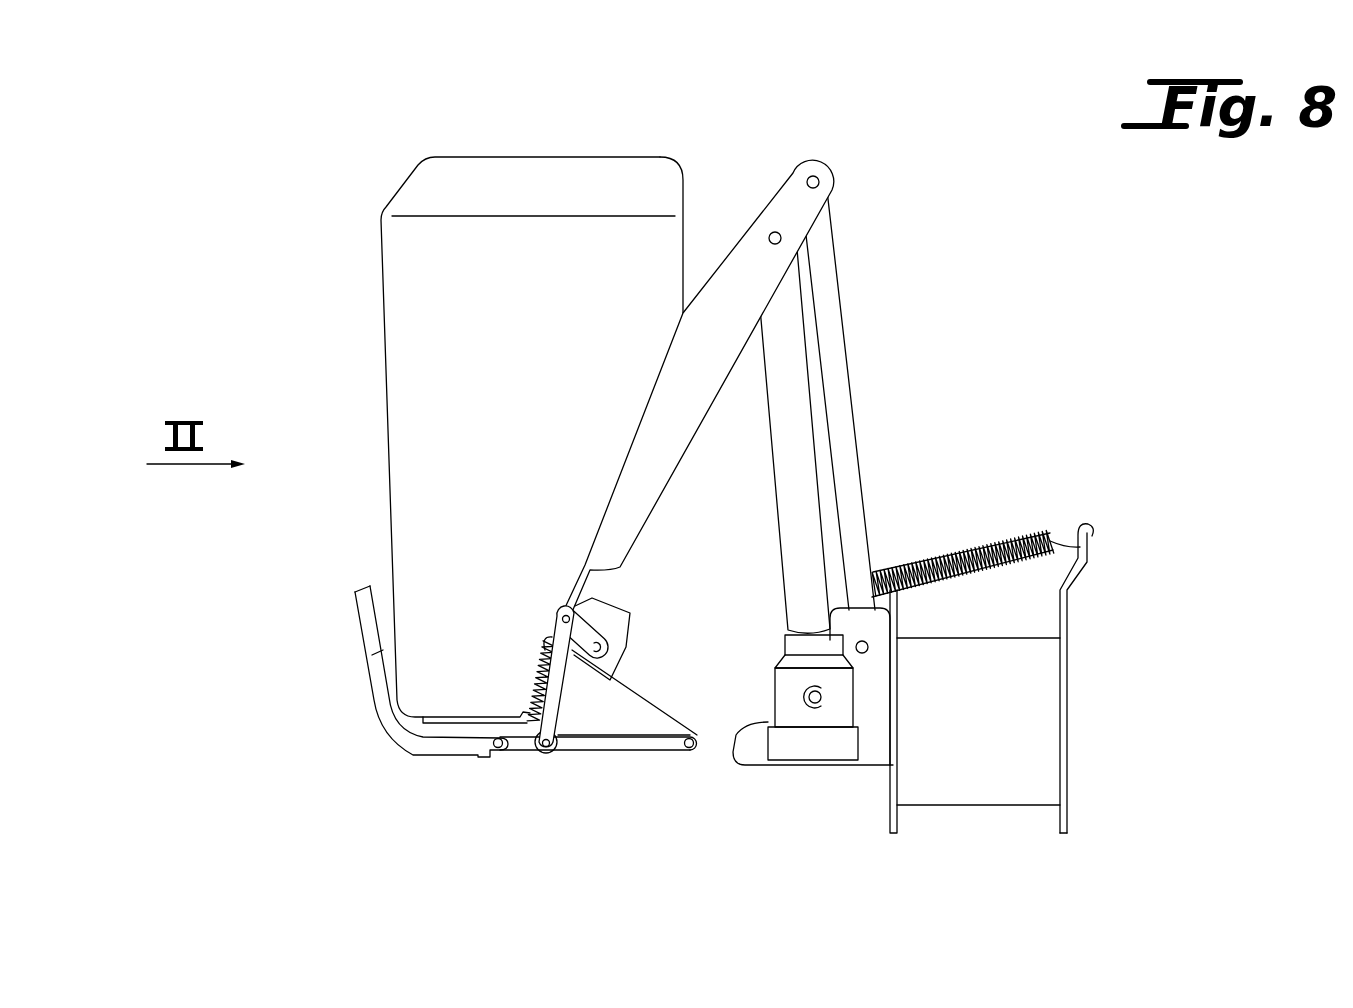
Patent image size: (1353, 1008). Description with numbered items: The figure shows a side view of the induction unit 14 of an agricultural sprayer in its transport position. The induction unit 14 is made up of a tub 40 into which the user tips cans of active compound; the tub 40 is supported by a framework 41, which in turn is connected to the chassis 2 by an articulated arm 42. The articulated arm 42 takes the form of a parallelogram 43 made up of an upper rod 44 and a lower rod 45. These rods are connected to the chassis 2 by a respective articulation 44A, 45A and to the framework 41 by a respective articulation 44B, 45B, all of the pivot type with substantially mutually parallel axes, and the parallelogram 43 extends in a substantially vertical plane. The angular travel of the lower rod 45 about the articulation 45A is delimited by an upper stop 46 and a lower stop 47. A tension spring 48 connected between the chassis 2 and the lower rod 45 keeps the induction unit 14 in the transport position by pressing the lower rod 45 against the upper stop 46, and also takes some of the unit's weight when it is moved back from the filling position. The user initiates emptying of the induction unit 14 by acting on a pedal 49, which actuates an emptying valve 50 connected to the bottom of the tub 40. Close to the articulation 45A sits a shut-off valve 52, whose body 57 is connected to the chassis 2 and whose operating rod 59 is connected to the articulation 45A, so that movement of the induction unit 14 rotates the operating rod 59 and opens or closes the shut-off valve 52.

The chassis 2 is at (1106, 814).
The induction unit 14 is at (296, 167).
The tub 40 is at (557, 157).
The framework 41 is at (781, 191).
The articulated arm 42 is at (988, 260).
The parallelogram 43 is at (904, 404).
The upper rod 44 is at (850, 372).
The articulation 44A is at (862, 653).
The articulation 44B is at (822, 182).
The lower rod 45 is at (815, 487).
The articulation 45A is at (817, 703).
The articulation 45B is at (783, 240).
The upper stop 46 is at (800, 628).
The lower stop 47 is at (757, 723).
The tension spring 48 is at (953, 548).
The pedal 49 is at (372, 694).
The emptying valve 50 is at (608, 603).
The shut-off valve 52 is at (820, 806).
The body 57 is at (753, 745).
The operating rod 59 is at (803, 700).